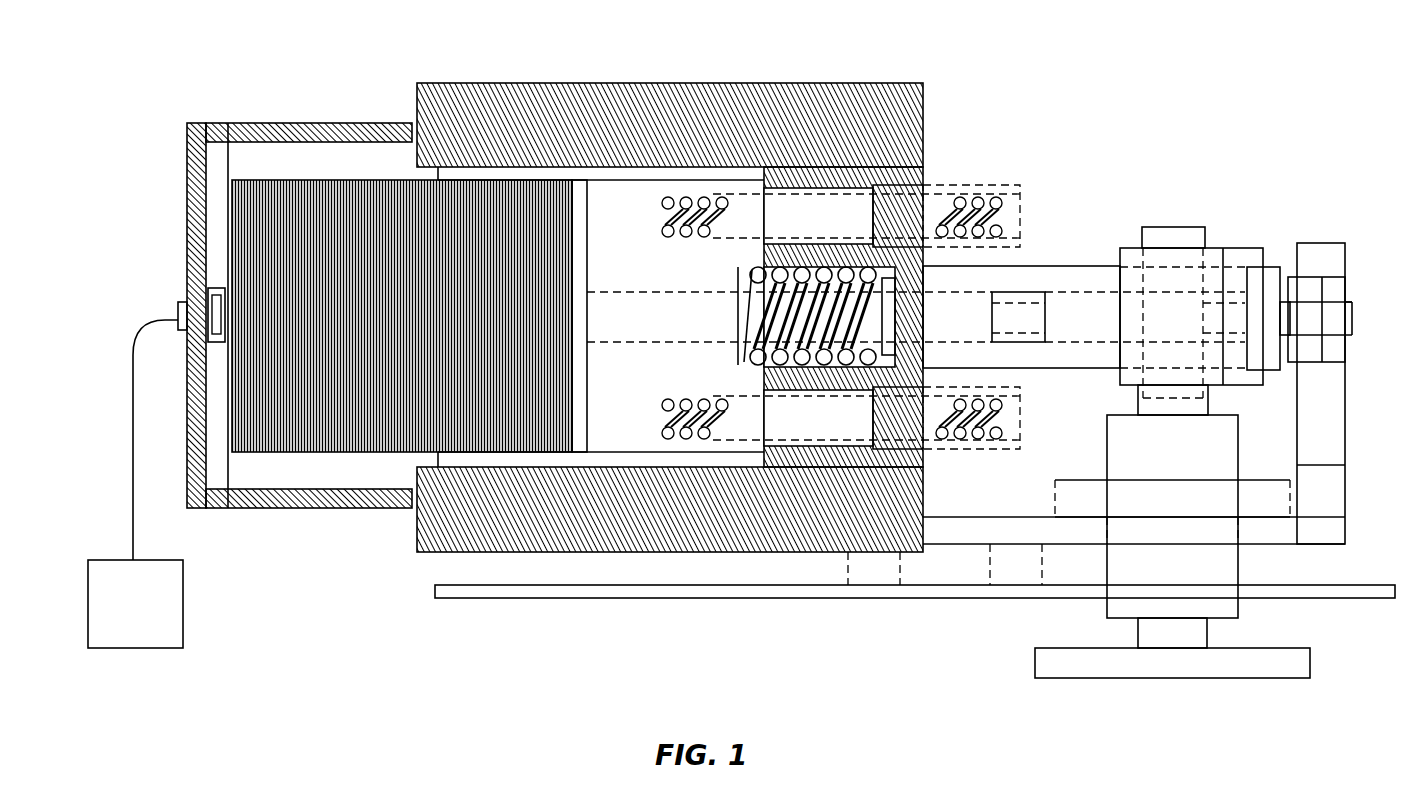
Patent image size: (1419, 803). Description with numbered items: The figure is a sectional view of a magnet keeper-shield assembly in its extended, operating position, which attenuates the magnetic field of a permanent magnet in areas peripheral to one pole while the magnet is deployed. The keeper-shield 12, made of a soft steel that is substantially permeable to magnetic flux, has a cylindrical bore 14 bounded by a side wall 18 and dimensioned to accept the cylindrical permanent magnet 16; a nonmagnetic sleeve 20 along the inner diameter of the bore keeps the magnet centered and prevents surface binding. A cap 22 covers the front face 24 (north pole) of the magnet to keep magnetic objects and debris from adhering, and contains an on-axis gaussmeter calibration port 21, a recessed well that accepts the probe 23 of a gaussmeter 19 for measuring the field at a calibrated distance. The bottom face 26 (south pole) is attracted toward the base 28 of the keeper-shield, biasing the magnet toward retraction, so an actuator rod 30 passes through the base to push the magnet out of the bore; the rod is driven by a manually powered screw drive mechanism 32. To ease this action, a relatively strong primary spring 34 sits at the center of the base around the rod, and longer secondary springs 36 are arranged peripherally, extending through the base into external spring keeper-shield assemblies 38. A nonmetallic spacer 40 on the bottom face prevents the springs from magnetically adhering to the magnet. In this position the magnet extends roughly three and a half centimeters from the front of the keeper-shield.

The keeper-shield 12 is at (833, 100).
The cylindrical bore 14 is at (628, 432).
The permanent magnet 16 is at (245, 388).
The side wall 18 is at (590, 97).
The gaussmeter 19 is at (183, 600).
The sleeve 20 is at (683, 167).
The gaussmeter calibration port 21 is at (217, 287).
The cap 22 is at (273, 508).
The probe 23 is at (178, 312).
The front face 24 is at (228, 238).
The bottom face 26 is at (574, 350).
The base 28 is at (763, 248).
The actuator rod 30 is at (674, 322).
The screw drive mechanism 32 is at (1177, 226).
The primary spring 34 is at (783, 270).
The secondary springs 36 is at (950, 197).
The external spring keeper-shield assemblies 38 is at (1022, 212).
The nonmetallic spacer 40 is at (582, 278).